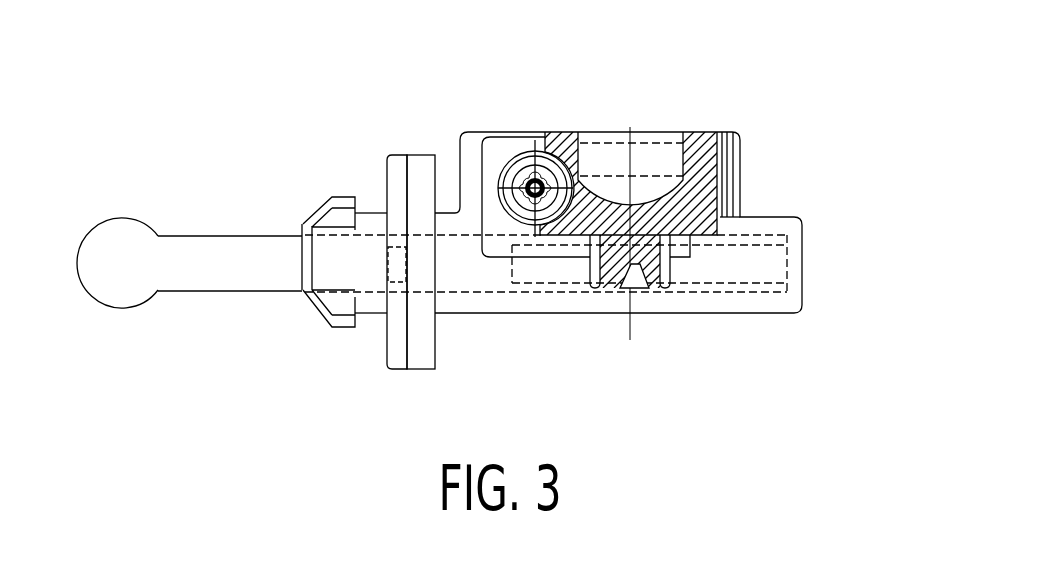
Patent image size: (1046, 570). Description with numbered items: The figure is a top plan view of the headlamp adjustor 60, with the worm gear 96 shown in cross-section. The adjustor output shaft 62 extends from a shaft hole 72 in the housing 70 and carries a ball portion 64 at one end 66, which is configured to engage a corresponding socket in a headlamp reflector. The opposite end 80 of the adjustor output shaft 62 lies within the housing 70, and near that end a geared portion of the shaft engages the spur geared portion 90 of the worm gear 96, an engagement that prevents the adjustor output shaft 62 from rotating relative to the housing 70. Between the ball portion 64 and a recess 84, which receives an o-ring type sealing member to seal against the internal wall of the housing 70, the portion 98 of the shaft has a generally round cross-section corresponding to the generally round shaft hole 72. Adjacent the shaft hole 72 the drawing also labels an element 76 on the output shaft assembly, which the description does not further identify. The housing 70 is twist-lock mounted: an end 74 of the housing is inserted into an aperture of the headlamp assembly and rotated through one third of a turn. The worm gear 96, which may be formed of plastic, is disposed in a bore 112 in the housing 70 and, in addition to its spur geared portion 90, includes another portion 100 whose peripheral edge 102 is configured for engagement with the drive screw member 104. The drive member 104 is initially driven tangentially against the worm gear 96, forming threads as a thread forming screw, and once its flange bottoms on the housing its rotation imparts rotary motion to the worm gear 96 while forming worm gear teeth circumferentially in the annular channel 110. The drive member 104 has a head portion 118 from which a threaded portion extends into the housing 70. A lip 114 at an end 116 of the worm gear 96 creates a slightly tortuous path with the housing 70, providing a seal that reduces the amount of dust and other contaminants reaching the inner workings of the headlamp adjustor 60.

The headlamp adjustor 60 is at (592, 210).
The adjustor output shaft 62 is at (236, 233).
The ball portion 64 is at (133, 290).
The end 66 is at (111, 280).
The housing 70 is at (490, 319).
The shaft hole 72 is at (303, 288).
The end of the housing 74 is at (300, 222).
The washer 76 is at (393, 352).
The end 80 is at (787, 270).
The recess 84 is at (393, 247).
The spur geared portion 90 is at (668, 275).
The worm gear 96 is at (626, 155).
The portion 98 is at (230, 304).
The portion 100 is at (710, 157).
The peripheral edge 102 is at (561, 136).
The drive screw member 104 is at (529, 136).
The annular channel 110 is at (648, 193).
The bore 112 is at (717, 133).
The lip 114 is at (527, 147).
The end of the worm gear 116 is at (626, 117).
The head portion 118 is at (527, 254).